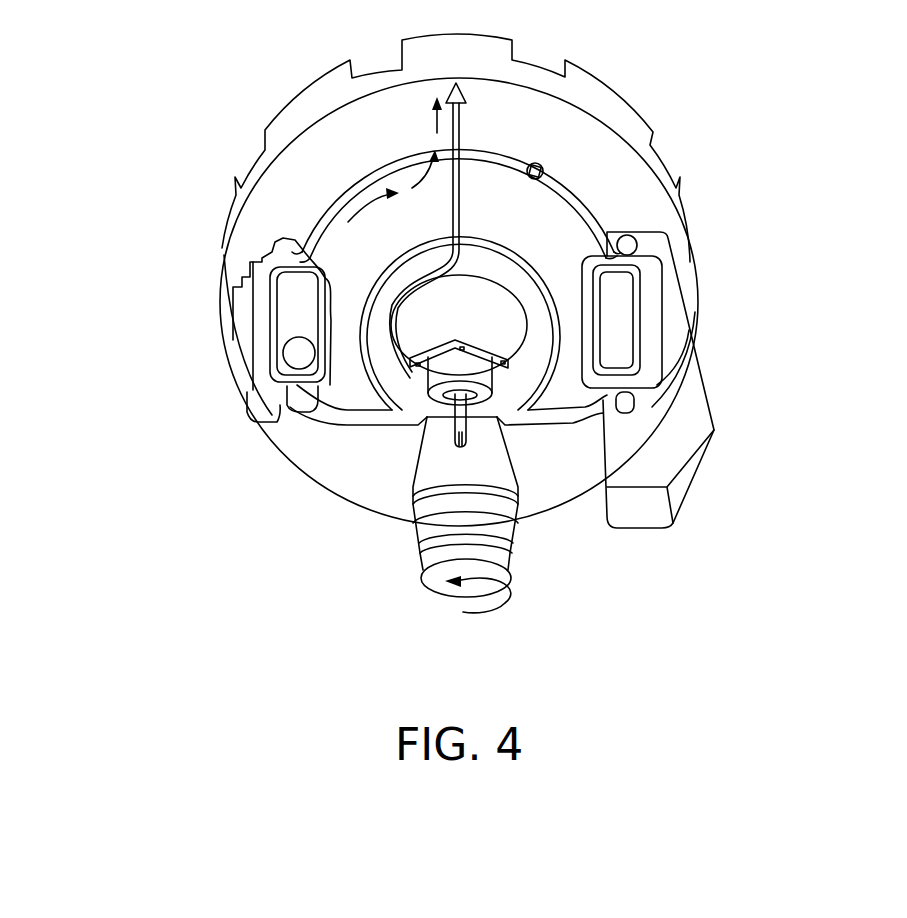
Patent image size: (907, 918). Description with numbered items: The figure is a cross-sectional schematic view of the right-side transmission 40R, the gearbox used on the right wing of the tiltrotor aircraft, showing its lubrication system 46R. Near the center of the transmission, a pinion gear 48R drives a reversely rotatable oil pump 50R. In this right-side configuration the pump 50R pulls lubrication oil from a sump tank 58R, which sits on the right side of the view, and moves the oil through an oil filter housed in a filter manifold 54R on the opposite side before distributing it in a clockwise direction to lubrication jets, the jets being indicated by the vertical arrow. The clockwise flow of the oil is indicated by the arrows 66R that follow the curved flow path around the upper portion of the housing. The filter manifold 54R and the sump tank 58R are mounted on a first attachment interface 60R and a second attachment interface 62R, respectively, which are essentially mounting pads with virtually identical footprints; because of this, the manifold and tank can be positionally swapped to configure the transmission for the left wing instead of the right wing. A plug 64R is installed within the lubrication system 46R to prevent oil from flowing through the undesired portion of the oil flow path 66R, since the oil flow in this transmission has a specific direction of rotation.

The transmission 40R is at (750, 104).
The lubrication system 46R is at (352, 473).
The pinion gear 48R is at (500, 468).
The oil pump 50R is at (448, 372).
The filter manifold 54R is at (245, 326).
The sump tank 58R is at (706, 416).
The first attachment interface 60R is at (272, 334).
The second attachment interface 62R is at (640, 322).
The plug 64R is at (541, 165).
The oil flow path arrows 66R is at (372, 204).